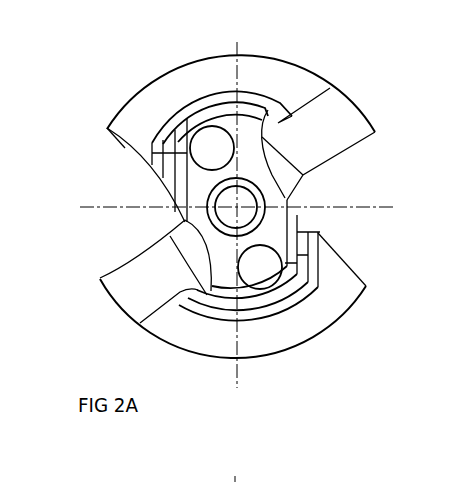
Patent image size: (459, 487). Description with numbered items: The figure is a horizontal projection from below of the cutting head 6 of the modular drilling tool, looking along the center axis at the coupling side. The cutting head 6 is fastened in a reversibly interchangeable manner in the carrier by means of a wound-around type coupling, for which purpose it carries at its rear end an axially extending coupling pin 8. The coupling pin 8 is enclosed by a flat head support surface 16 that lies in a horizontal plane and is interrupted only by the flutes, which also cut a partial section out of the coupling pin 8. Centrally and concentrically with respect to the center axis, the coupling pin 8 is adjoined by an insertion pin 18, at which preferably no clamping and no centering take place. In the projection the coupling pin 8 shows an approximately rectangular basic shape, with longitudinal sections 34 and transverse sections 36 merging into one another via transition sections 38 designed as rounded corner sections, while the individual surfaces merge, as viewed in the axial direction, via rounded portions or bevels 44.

The cutting head 6 is at (344, 59).
The coupling pin 8 is at (282, 209).
The head support surface 16 is at (313, 315).
The insertion pin 18 is at (210, 210).
The longitudinal sections 34 is at (310, 229).
The transverse sections 36 is at (250, 368).
The transition sections 38 is at (310, 285).
The bevels 44 is at (160, 143).